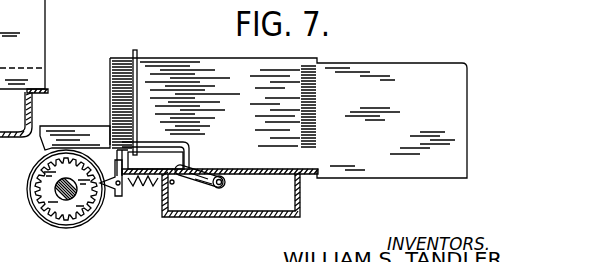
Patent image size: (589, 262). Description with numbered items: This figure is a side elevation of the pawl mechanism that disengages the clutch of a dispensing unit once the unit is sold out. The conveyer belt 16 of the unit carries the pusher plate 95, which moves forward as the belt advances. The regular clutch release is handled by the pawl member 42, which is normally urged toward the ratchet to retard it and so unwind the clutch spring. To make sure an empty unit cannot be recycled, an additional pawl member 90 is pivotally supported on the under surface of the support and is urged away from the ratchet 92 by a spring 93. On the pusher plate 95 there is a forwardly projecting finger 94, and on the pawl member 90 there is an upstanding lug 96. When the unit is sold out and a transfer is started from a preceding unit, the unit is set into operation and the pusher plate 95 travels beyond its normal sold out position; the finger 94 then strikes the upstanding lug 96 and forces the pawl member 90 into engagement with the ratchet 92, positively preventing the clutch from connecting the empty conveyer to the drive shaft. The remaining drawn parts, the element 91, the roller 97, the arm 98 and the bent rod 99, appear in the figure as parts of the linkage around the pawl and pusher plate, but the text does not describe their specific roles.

The conveyer belt 16 is at (30, 165).
The pawl member 42 is at (70, 127).
The pawl member 90 is at (117, 197).
The tray 91 is at (200, 261).
The ratchet 92 is at (58, 208).
The spring 93 is at (155, 184).
The forwardly projecting finger 94 is at (145, 184).
The pusher plate 95 is at (136, 67).
The upstanding lug 96 is at (136, 146).
The roller 97 is at (225, 185).
The arm 98 is at (205, 172).
The bent rod 99 is at (192, 147).